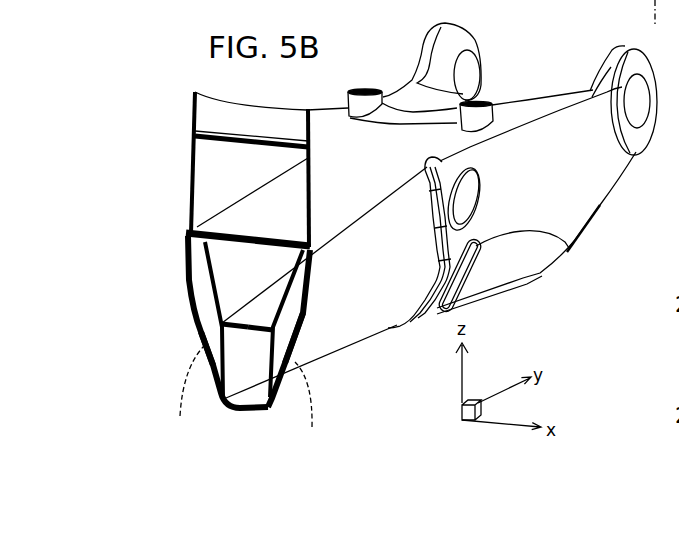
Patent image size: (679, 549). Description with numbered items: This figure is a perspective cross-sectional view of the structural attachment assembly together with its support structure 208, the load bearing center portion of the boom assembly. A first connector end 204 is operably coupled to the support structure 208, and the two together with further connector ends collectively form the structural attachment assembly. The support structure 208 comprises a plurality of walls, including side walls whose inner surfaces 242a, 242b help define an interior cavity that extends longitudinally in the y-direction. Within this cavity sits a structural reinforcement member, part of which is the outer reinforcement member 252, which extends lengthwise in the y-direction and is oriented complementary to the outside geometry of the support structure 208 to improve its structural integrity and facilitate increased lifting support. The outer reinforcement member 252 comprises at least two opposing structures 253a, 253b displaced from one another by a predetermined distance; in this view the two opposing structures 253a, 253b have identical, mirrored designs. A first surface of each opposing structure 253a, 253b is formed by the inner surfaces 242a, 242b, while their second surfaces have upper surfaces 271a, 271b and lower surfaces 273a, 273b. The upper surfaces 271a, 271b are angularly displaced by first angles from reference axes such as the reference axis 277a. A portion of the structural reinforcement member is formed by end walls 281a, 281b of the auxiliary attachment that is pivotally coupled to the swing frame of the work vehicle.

The first connector end 204 is at (570, 198).
The support structure 208 is at (343, 347).
The outer reinforcement member 252 is at (176, 266).
The upper surface 271a is at (187, 287).
The upper surface 271b is at (302, 252).
The end wall 281a is at (192, 180).
The end wall 281b is at (309, 188).
The inner surface 242a is at (202, 322).
The inner surface 242b is at (275, 326).
The lower surface 273a is at (202, 346).
The lower surface 273b is at (306, 324).
The opposing structure 253a is at (178, 394).
The opposing structure 253b is at (325, 409).
The reference axis 277a is at (640, 9).